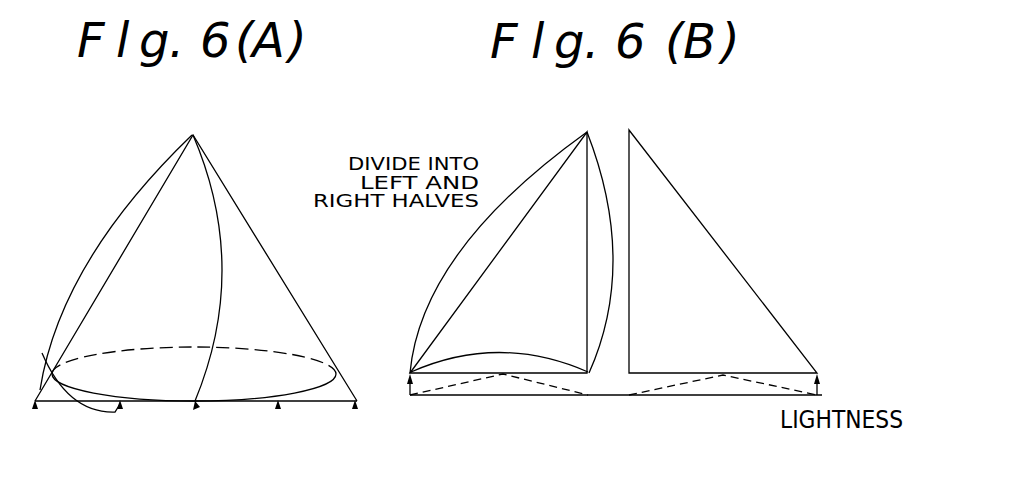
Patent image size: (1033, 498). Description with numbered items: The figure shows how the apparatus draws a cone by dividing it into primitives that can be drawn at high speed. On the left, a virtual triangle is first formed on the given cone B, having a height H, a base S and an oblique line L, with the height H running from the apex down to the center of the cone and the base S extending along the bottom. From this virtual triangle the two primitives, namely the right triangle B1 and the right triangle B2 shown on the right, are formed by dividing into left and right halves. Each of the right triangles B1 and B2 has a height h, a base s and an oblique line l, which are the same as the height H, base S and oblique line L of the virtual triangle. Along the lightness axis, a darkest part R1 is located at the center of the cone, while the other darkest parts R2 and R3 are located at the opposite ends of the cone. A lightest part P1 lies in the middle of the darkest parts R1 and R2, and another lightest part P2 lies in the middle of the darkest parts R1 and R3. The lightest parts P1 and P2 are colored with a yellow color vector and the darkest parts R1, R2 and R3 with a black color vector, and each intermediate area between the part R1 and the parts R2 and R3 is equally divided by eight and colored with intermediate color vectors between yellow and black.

In FIG. 6A, the cone B is at (196, 268).
In FIG. 6A, the oblique line L is at (116, 262).
In FIG. 6A, the height H is at (212, 268).
In FIG. 6A, the base S is at (193, 402).
In FIG. 6A, the darkest part R1 is at (196, 407).
In FIG. 6B, the darkest part R1 is at (610, 412).
In FIG. 6A, the darkest part R2 is at (35, 408).
In FIG. 6B, the darkest part R2 is at (415, 398).
In FIG. 6A, the darkest part R3 is at (355, 408).
In FIG. 6B, the darkest part R3 is at (820, 393).
In FIG. 6A, the lightest part P2 is at (278, 408).
In FIG. 6B, the lightest part P2 is at (723, 378).
In FIG. 6B, the lightest part P1 is at (509, 377).
In FIG. 6B, the right triangle B1 is at (489, 232).
In FIG. 6B, the right triangle B2 is at (729, 232).
In FIG. 6B, the oblique line l is at (498, 252).
In FIG. 6B, the height h is at (603, 252).
In FIG. 6B, the base s is at (499, 357).